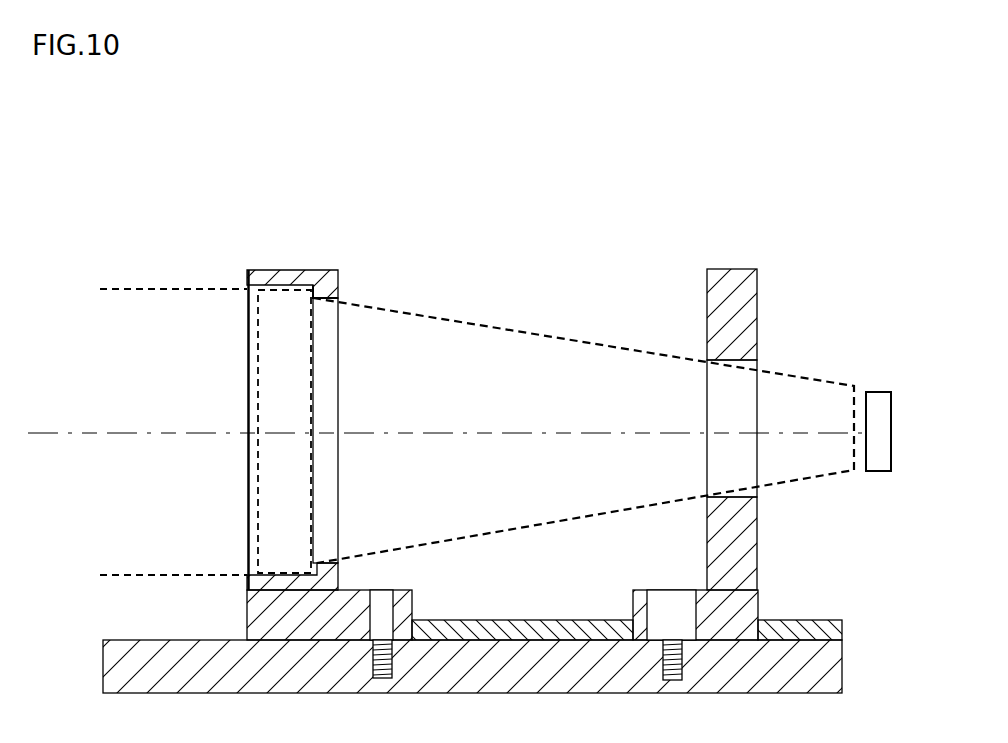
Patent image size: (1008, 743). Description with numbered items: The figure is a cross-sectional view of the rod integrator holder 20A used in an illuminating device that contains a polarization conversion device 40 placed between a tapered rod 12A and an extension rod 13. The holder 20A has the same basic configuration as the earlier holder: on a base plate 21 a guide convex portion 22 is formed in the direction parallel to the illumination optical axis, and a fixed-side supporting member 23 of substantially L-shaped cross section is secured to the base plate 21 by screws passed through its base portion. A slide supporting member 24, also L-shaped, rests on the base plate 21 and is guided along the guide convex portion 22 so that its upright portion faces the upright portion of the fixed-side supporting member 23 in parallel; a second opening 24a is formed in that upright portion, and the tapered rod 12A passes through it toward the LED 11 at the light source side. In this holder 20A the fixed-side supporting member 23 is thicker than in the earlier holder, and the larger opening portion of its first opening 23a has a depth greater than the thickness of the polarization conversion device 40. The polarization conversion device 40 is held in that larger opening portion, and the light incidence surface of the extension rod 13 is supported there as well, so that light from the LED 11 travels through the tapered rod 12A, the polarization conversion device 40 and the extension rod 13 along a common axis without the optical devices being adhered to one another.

The LED 11 is at (880, 403).
The tapered rod 12A is at (477, 320).
The extension rod 13 is at (165, 288).
The rod integrator holder 20A is at (460, 226).
The base plate 21 is at (162, 650).
The guide convex portion 22 is at (472, 632).
The fixed-side supporting member 23 is at (318, 287).
The first opening 23a is at (340, 306).
The slide supporting member 24 is at (729, 436).
The second opening 24a is at (773, 372).
The polarization conversion device 40 is at (329, 436).